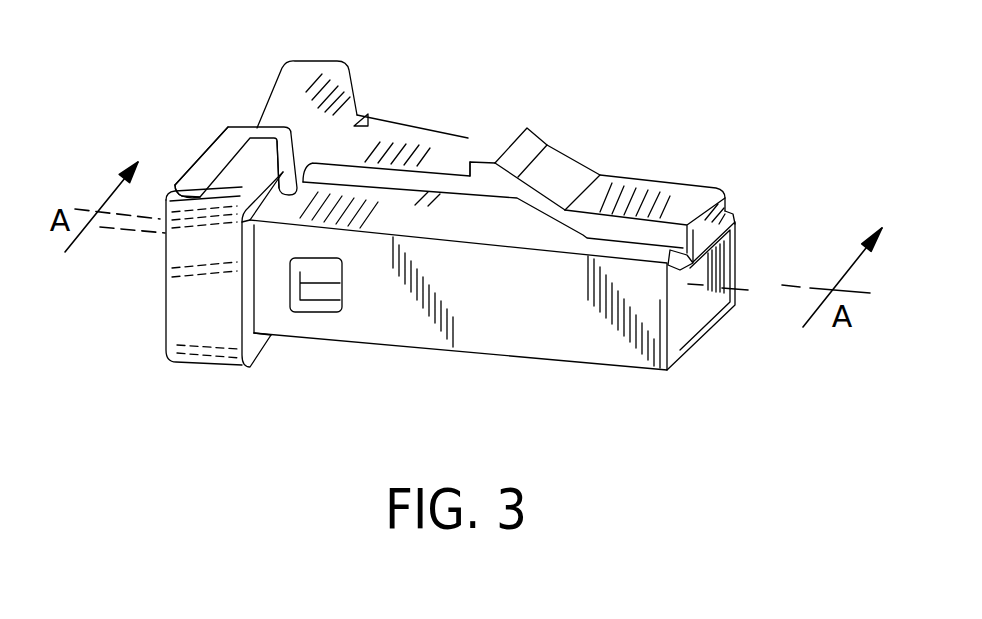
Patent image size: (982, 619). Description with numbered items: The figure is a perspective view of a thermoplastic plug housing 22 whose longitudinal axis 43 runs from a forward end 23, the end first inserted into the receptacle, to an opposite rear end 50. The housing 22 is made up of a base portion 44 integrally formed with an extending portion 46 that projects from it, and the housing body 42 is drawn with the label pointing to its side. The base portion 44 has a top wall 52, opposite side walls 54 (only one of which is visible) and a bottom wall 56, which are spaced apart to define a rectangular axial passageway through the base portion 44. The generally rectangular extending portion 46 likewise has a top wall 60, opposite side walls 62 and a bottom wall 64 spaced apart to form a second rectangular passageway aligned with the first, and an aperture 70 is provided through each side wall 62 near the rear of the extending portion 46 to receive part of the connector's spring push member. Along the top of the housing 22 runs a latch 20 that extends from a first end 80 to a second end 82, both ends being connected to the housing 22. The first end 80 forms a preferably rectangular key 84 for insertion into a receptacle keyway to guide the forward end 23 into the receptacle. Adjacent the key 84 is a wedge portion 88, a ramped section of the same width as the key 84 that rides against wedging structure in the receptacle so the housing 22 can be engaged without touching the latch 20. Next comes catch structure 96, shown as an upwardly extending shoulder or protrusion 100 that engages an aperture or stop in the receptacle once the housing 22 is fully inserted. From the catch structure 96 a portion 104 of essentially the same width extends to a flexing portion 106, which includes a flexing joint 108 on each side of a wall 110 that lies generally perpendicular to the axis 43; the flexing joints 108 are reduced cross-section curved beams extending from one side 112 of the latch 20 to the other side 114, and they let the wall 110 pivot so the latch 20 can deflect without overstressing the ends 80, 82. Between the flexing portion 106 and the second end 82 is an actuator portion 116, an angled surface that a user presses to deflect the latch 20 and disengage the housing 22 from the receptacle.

The latch 20 is at (455, 110).
The plug housing 22 is at (432, 360).
The forward end 23 is at (712, 302).
The housing body 42 is at (505, 335).
The longitudinal axis 43 is at (766, 292).
The base portion 44 is at (208, 342).
The extending portion 46 is at (485, 337).
The rear end 50 is at (160, 315).
The top wall 52 is at (220, 196).
The side wall 54 is at (187, 298).
The bottom wall 56 is at (258, 357).
The top wall 60 is at (490, 227).
The side wall 62 is at (533, 316).
The bottom wall 64 is at (698, 322).
The aperture 70 is at (310, 278).
The first end 80 is at (731, 210).
The second end 82 is at (167, 200).
The key 84 is at (676, 186).
The wedge portion 88 is at (560, 170).
The catch structure 96 is at (508, 136).
The protrusion 100 is at (488, 157).
The extending portion 104 is at (373, 140).
The flexing portion 106 is at (353, 62).
The flexing joint 108 is at (226, 126).
The wall 110 is at (285, 157).
The side 112 is at (432, 187).
The side 114 is at (468, 138).
The actuator portion 116 is at (233, 112).